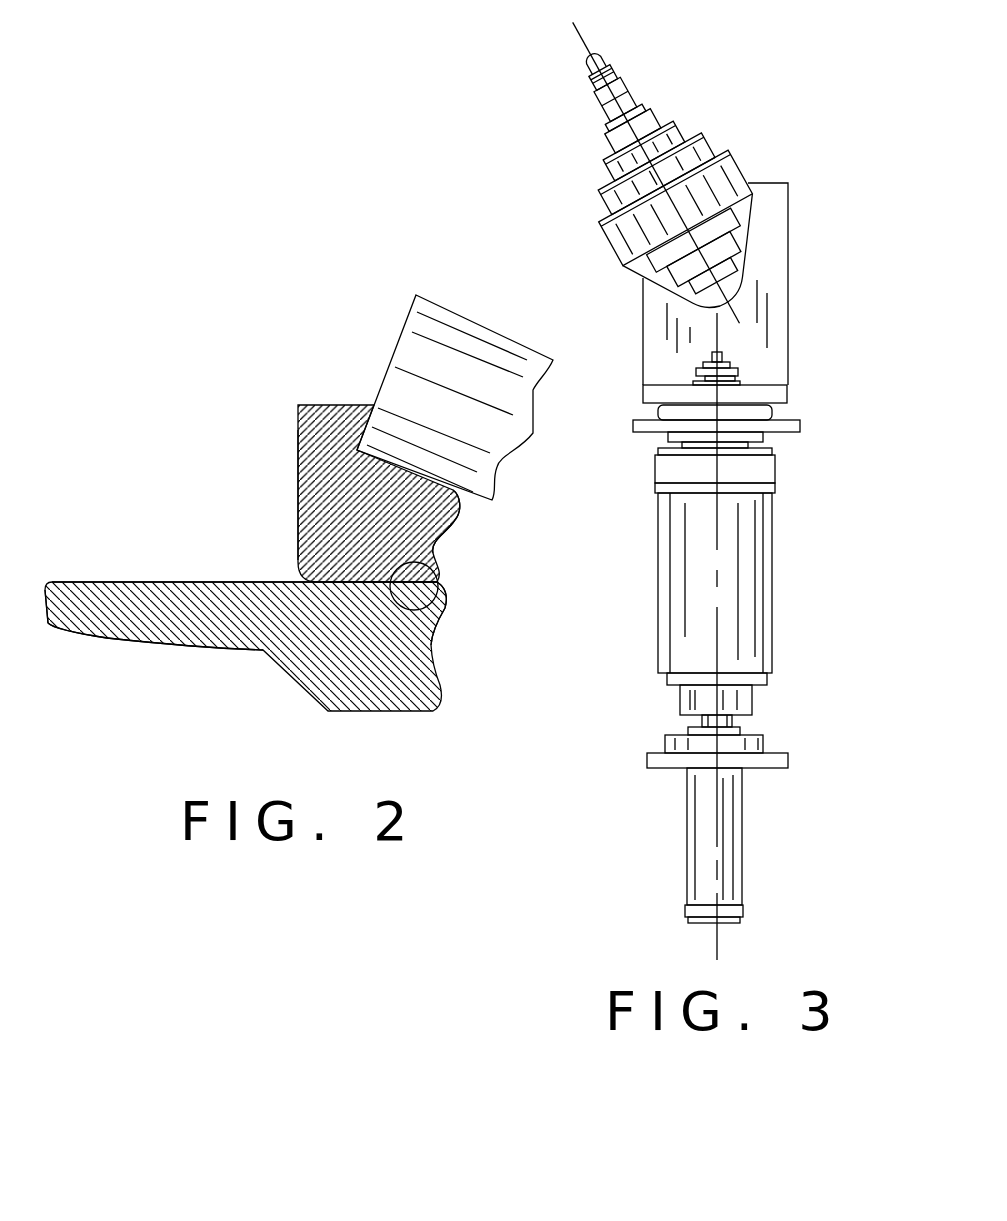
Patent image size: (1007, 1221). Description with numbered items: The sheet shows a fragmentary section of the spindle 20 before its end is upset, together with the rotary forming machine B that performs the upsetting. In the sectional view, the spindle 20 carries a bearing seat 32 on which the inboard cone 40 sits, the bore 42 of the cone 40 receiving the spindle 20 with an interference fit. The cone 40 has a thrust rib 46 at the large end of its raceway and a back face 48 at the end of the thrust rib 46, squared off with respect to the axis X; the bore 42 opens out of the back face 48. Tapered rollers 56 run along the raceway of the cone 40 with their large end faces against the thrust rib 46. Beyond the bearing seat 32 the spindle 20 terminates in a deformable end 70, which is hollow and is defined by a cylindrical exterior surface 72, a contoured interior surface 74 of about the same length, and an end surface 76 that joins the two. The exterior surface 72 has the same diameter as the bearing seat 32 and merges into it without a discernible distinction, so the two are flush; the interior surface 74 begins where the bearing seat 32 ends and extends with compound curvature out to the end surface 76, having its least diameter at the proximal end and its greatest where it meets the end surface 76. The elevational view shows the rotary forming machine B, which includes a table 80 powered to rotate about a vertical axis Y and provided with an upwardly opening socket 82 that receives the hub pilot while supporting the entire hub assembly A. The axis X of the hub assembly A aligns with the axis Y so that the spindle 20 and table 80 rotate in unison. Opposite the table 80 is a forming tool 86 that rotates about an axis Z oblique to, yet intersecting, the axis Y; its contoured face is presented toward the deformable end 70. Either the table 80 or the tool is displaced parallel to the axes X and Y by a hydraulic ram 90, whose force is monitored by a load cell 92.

In FIG. 2, the spindle 20 is at (406, 693).
In FIG. 2, the bearing seat 32 is at (413, 561).
In FIG. 2, the inboard cone 40 is at (437, 508).
In FIG. 2, the bore 42 is at (412, 611).
In FIG. 2, the thrust rib 46 is at (337, 420).
In FIG. 2, the back face 48 is at (298, 503).
In FIG. 2, the tapered rollers 56 is at (452, 338).
In FIG. 2, the deformable end 70 is at (113, 648).
In FIG. 3, the deformable end 70 is at (722, 348).
In FIG. 2, the exterior surface 72 is at (201, 582).
In FIG. 2, the interior surface 74 is at (188, 647).
In FIG. 2, the end surface 76 is at (40, 598).
In FIG. 3, the table 80 is at (775, 393).
In FIG. 3, the socket 82 is at (657, 412).
In FIG. 3, the forming tool 86 is at (747, 281).
In FIG. 3, the hydraulic ram 90 is at (742, 805).
In FIG. 3, the load cell 92 is at (735, 726).
In FIG. 3, the axis Z is at (574, 43).
In FIG. 3, the axis X is at (710, 322).
In FIG. 3, the axis Y is at (718, 942).
In FIG. 3, the hub assembly A is at (693, 366).
In FIG. 3, the rotary forming machine B is at (840, 460).